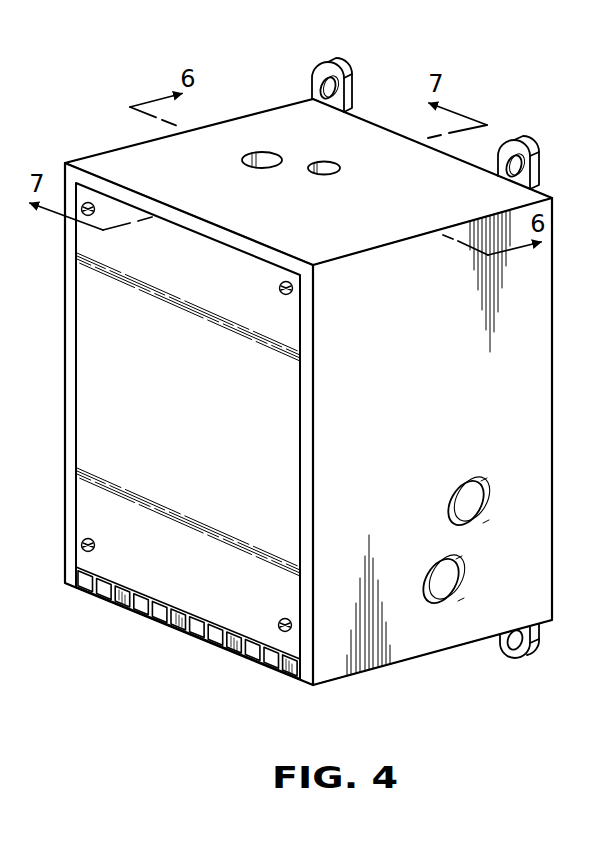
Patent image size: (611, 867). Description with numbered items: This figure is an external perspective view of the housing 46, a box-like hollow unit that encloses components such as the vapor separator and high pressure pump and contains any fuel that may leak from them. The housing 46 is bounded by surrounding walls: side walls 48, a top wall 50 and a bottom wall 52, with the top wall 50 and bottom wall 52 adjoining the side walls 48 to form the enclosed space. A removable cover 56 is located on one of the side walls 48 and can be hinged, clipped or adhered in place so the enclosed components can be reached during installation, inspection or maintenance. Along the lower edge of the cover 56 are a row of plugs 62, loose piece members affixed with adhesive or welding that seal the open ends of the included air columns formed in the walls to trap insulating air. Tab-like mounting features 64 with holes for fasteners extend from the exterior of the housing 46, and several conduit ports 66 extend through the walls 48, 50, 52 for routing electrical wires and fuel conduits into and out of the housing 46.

The housing 46 is at (129, 144).
The side walls 48 is at (64, 357).
The top wall 50 is at (368, 143).
The bottom wall 52 is at (455, 649).
The removable cover 56 is at (188, 431).
The plugs 62 is at (84, 588).
The mounting features 64 is at (327, 63).
The conduit ports 66 is at (324, 168).